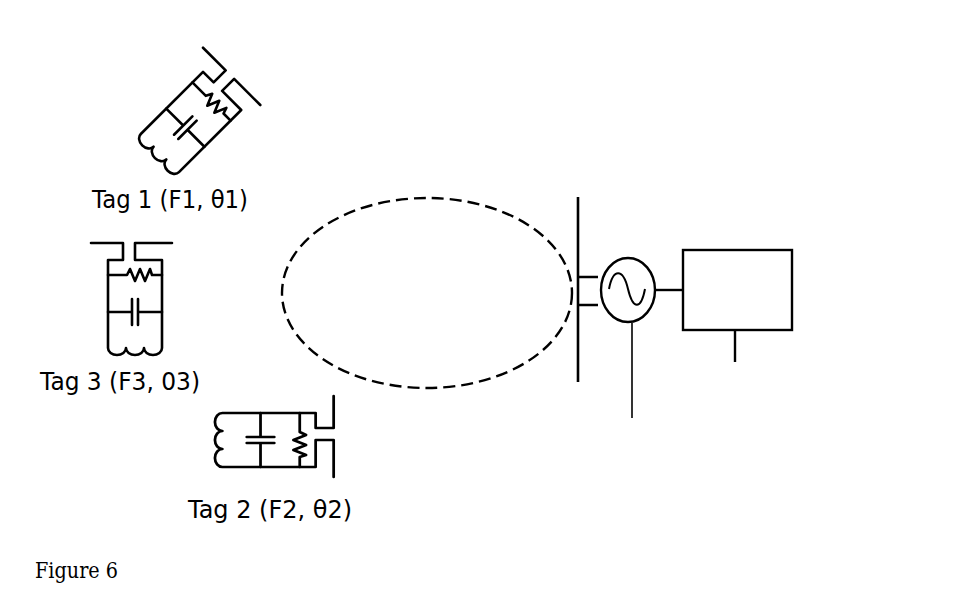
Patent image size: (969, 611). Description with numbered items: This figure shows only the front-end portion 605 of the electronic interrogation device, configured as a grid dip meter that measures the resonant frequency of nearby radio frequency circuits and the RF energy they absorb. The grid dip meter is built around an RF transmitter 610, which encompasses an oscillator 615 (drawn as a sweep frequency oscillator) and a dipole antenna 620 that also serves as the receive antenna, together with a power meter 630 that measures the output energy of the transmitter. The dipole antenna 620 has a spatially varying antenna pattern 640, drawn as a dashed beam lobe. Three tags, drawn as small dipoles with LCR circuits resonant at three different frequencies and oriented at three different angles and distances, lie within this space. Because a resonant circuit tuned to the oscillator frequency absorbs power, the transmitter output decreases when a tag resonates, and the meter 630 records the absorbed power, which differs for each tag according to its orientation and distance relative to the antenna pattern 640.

The front-end portion 605 is at (639, 121).
The RF transmitter 610 is at (648, 407).
The oscillator 615 is at (677, 396).
The antenna 620 is at (585, 220).
The power meter 630 is at (753, 307).
The antenna pattern 640 is at (455, 198).